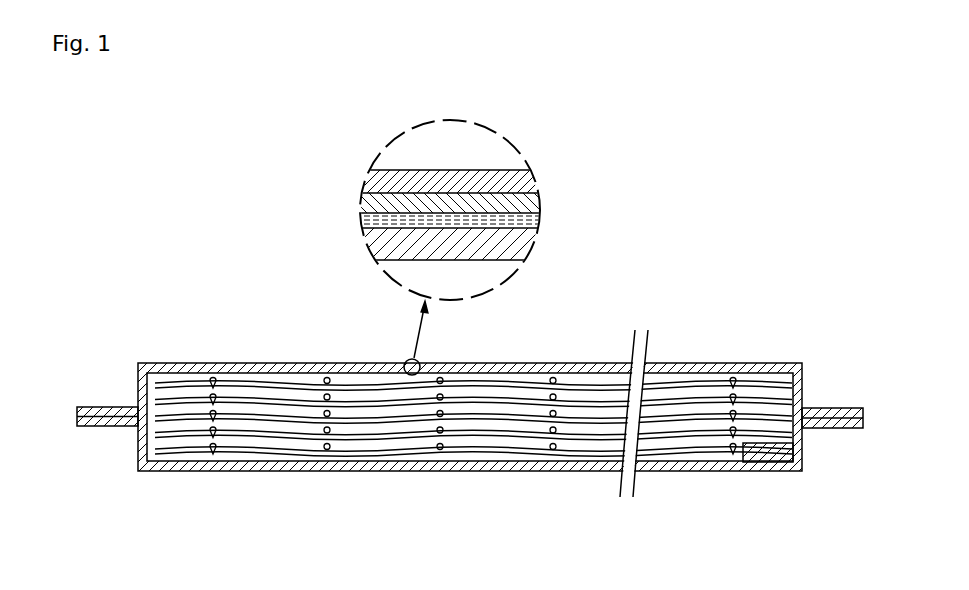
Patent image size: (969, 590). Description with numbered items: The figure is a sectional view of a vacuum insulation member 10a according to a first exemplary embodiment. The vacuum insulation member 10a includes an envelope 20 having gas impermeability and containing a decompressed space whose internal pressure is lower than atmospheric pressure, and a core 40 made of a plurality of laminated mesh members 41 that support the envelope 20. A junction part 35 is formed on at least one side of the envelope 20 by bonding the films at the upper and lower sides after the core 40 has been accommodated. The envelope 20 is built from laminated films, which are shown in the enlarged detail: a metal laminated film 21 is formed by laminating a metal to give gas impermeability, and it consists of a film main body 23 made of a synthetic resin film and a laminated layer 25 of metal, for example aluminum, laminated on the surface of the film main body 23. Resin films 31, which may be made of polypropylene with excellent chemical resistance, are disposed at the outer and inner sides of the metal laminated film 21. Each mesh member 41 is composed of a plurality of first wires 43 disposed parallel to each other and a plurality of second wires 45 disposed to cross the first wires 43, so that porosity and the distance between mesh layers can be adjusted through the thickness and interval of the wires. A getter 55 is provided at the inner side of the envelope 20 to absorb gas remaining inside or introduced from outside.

The vacuum insulation member 10a is at (193, 294).
The envelope 20 is at (237, 363).
The junction part 35 is at (100, 406).
The core 40 is at (780, 279).
The mesh member 41 is at (760, 405).
The first wire 43 is at (552, 462).
The second wire 45 is at (513, 453).
The getter 55 is at (763, 462).
The resin film 31 is at (450, 180).
The film main body 23 is at (533, 200).
The laminated layer 25 is at (531, 222).
The metal laminated film 21 is at (609, 178).